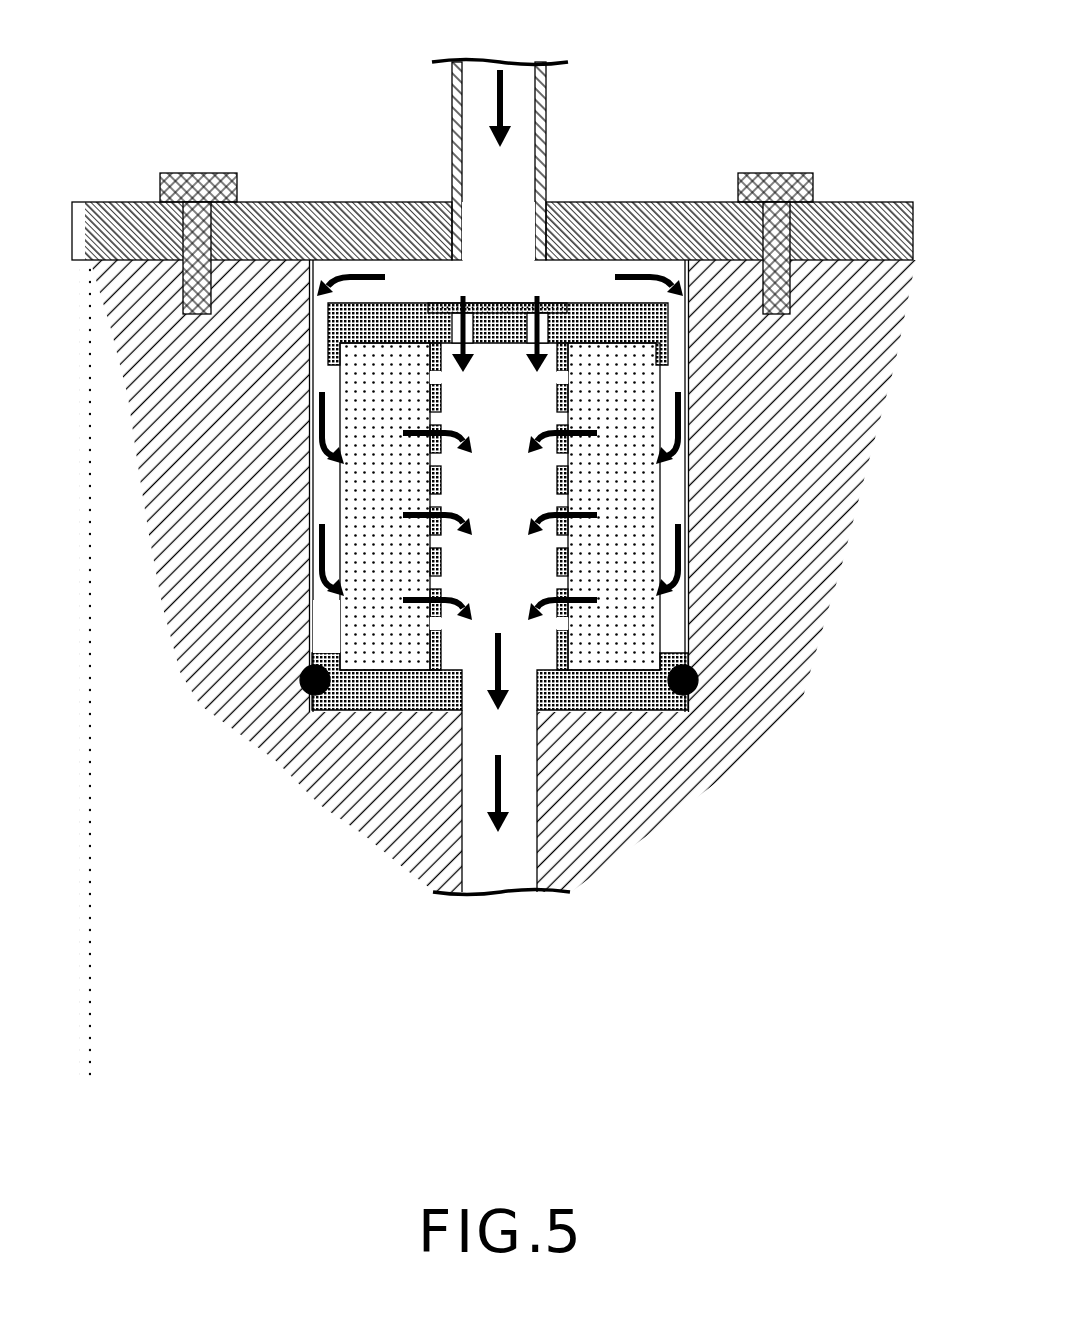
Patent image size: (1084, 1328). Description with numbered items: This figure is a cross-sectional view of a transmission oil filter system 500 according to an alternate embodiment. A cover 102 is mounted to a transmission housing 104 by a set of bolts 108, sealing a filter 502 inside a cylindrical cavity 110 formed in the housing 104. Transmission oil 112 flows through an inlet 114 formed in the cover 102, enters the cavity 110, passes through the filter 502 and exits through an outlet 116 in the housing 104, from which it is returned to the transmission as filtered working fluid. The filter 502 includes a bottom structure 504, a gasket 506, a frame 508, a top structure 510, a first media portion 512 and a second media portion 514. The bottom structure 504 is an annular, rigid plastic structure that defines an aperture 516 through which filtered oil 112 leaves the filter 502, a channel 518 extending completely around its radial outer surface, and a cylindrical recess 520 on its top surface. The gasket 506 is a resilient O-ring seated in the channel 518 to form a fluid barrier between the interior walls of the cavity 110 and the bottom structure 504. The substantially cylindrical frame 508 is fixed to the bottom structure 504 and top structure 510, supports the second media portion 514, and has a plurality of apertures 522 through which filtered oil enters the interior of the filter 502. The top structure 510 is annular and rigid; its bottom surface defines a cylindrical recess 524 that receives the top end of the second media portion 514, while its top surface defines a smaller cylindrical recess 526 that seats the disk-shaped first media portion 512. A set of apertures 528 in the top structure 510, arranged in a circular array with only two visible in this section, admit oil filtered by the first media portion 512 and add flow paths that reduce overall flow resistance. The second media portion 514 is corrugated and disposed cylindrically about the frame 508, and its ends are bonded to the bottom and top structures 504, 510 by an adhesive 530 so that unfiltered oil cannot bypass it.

The system 500 is at (244, 74).
The cover 102 is at (326, 220).
The transmission housing 104 is at (194, 401).
The bolts 108 is at (197, 186).
The cylindrical cavity 110 is at (690, 621).
The transmission oil 112 is at (500, 222).
The inlet 114 is at (513, 168).
The outlet 116 is at (513, 848).
The filter 502 is at (688, 494).
The bottom structure 504 is at (388, 700).
The gasket 506 is at (700, 672).
The frame 508 is at (440, 577).
The top structure 510 is at (420, 312).
The first media portion 512 is at (500, 303).
The second media portion 514 is at (626, 566).
The aperture 516 is at (524, 680).
The channel 518 is at (672, 698).
The recess 520 is at (373, 650).
The apertures 522 is at (552, 475).
The cylindrical recess 524 is at (384, 358).
The smaller cylindrical recess 526 is at (556, 298).
The apertures 528 is at (527, 347).
The adhesive 530 is at (613, 350).